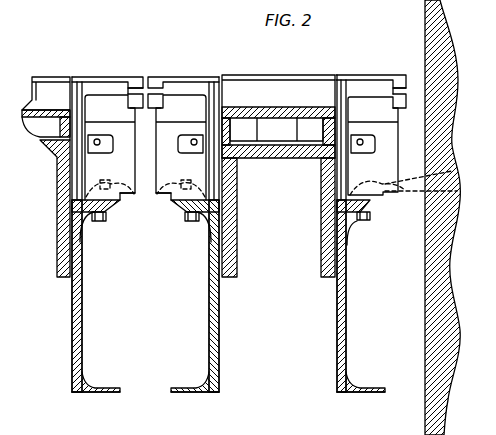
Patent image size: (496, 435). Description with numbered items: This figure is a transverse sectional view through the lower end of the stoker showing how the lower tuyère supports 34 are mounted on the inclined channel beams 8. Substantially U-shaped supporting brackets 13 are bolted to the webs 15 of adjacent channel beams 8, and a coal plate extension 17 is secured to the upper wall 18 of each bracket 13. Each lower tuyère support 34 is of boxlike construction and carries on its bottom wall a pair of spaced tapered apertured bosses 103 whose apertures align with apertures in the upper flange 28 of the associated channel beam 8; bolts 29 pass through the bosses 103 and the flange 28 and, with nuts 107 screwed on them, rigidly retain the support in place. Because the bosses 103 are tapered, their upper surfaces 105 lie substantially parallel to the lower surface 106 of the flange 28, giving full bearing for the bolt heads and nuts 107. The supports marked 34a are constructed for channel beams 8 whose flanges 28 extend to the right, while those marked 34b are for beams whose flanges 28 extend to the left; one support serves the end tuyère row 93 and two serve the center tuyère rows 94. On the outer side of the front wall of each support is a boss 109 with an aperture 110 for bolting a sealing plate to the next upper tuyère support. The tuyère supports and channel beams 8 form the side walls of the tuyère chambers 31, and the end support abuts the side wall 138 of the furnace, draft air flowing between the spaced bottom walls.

The channel beam 8 is at (77, 393).
The supporting bracket 13 is at (58, 264).
The web 15 is at (83, 290).
The coal plate extension 17 is at (230, 108).
The upper wall 18 is at (306, 158).
The upper flange 28 is at (100, 213).
The bolt 29 is at (252, 187).
The tuyère chamber 31 is at (146, 348).
The lower tuyère support 34 is at (131, 82).
The lower tuyère support 34a is at (458, 122).
The lower tuyère support 34b is at (195, 83).
The end tuyère row 93 is at (362, 80).
The center tuyère row 94 is at (122, 78).
The apertured boss 103 is at (82, 204).
The upper surface 105 is at (90, 182).
The lower surface 106 is at (78, 238).
The nut 107 is at (95, 224).
The boss 109 is at (453, 144).
The aperture 110 is at (97, 139).
The side wall 138 is at (456, 78).